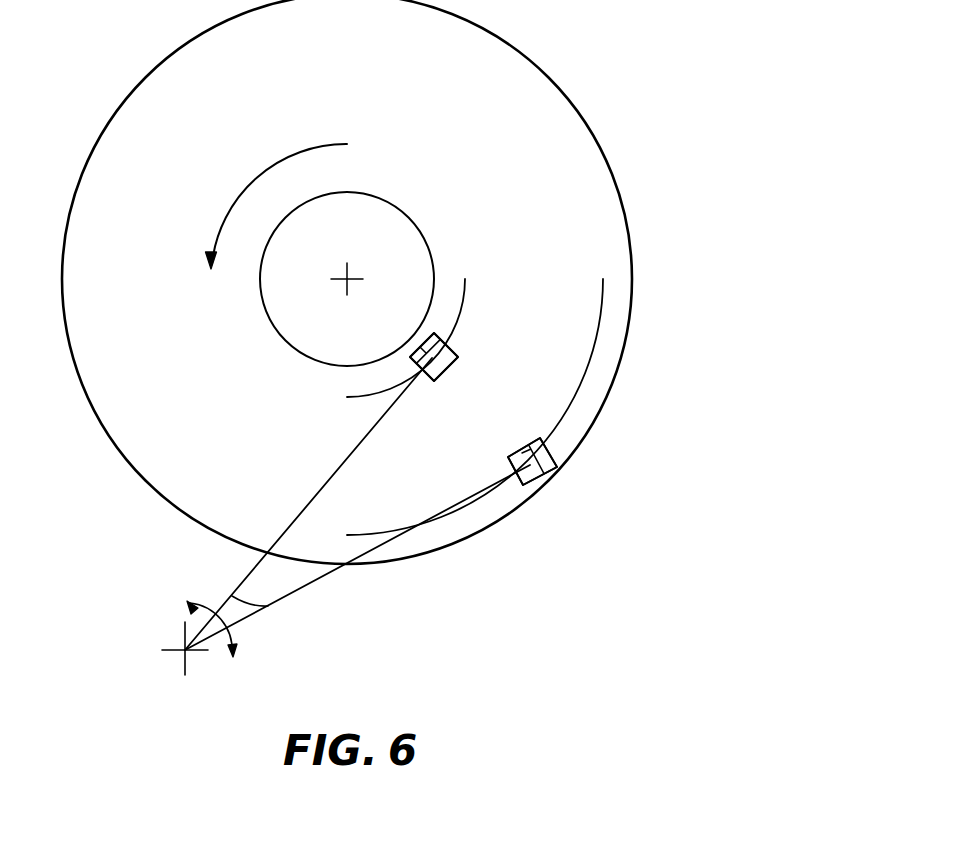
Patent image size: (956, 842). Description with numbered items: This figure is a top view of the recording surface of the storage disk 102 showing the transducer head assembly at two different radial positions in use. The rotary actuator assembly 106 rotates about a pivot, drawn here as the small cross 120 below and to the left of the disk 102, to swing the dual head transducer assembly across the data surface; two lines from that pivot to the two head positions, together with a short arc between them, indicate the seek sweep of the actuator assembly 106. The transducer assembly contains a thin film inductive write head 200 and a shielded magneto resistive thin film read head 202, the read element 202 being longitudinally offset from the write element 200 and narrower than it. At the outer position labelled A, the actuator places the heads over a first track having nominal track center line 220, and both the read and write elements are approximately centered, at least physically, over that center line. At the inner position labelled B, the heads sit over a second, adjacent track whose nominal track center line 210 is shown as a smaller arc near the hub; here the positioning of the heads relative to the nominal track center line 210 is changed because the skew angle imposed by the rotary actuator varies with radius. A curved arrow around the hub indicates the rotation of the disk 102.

The storage disk 102 is at (592, 132).
The nominal track center line 210 is at (462, 282).
The nominal track center line 220 is at (603, 332).
The thin film inductive write head 200 is at (540, 440).
The shielded magneto resistive thin film read head 202 is at (507, 458).
The actuator assembly 106 is at (293, 596).
The actuator pivot 120 is at (162, 650).
The head position A (outer) A is at (578, 450).
The head position B (inner) B is at (470, 350).